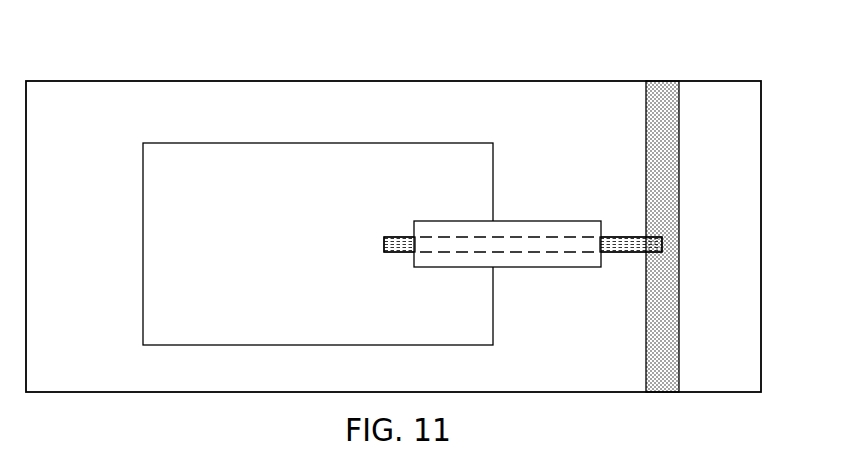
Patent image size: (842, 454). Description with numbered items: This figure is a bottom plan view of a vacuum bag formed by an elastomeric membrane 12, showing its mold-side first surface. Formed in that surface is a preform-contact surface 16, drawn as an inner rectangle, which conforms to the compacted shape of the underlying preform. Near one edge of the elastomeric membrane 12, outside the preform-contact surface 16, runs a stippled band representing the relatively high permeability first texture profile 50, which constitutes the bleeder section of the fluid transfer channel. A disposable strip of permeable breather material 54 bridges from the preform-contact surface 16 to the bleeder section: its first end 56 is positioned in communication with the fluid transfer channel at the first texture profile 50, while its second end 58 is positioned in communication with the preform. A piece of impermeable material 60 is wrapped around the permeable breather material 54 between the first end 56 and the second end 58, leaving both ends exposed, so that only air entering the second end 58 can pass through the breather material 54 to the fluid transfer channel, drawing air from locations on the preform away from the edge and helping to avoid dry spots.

The elastomeric membrane 12 is at (87, 80).
The preform-contact surface 16 is at (203, 185).
The first texture profile 50 is at (660, 91).
The permeable breather material 54 is at (400, 236).
The first end 56 is at (645, 254).
The second end 58 is at (388, 254).
The impermeable material 60 is at (547, 221).